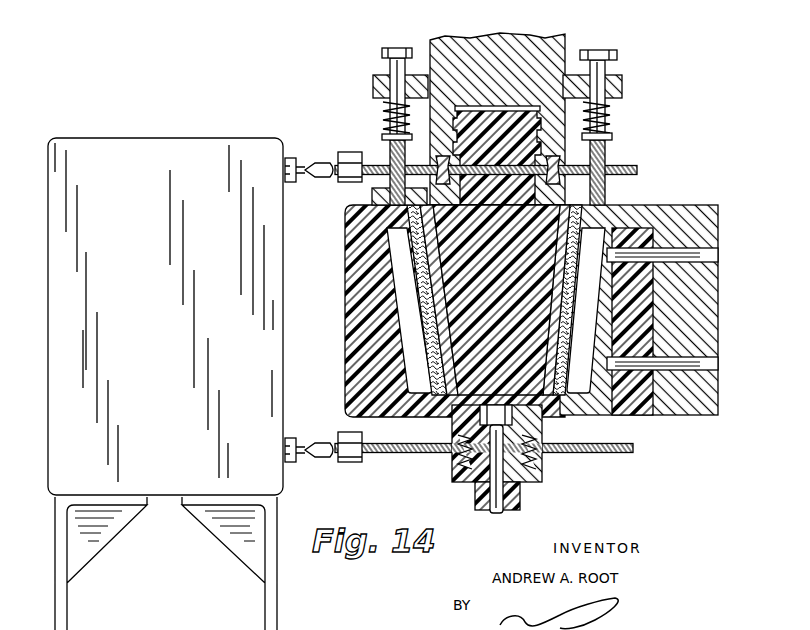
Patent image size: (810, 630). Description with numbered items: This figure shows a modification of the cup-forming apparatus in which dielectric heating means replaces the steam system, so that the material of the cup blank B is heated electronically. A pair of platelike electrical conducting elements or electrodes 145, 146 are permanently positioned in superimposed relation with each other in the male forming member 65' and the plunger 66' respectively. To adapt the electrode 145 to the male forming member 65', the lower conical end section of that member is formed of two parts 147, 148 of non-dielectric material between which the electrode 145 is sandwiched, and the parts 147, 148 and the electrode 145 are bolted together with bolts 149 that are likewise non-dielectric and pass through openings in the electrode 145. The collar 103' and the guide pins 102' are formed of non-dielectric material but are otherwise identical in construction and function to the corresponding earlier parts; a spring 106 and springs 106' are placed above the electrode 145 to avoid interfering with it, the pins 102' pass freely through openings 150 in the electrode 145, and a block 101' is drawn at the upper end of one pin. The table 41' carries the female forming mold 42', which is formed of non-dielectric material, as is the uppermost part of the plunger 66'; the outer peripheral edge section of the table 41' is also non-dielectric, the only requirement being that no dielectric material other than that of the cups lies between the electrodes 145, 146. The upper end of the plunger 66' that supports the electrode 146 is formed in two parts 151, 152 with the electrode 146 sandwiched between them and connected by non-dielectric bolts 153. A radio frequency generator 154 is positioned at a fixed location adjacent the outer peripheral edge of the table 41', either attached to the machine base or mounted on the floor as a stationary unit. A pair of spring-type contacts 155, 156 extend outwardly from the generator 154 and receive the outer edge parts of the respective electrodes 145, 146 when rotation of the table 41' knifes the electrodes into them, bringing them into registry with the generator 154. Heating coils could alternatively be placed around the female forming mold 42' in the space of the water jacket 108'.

The table 41' is at (666, 353).
The female forming mold 42' is at (439, 300).
The male forming member 65' is at (537, 105).
The plunger 66' is at (512, 460).
The bushing block 101' is at (629, 82).
The guide pins 102' is at (376, 108).
The collar 103' is at (362, 198).
The spring 106 is at (371, 113).
The springs 106' is at (635, 119).
The water jacket 108' is at (448, 310).
The electrode 145 is at (637, 170).
The electrode 146 is at (633, 452).
The part 147 is at (643, 317).
The part 148 is at (490, 118).
The bolts 149 is at (545, 183).
The openings 150 is at (388, 166).
The part 151 is at (518, 490).
The part 152 is at (514, 420).
The bolts 153 is at (460, 464).
The radio frequency generator 154 is at (178, 343).
The contact 155 is at (316, 165).
The contact 156 is at (320, 456).
The cup blank B is at (440, 300).